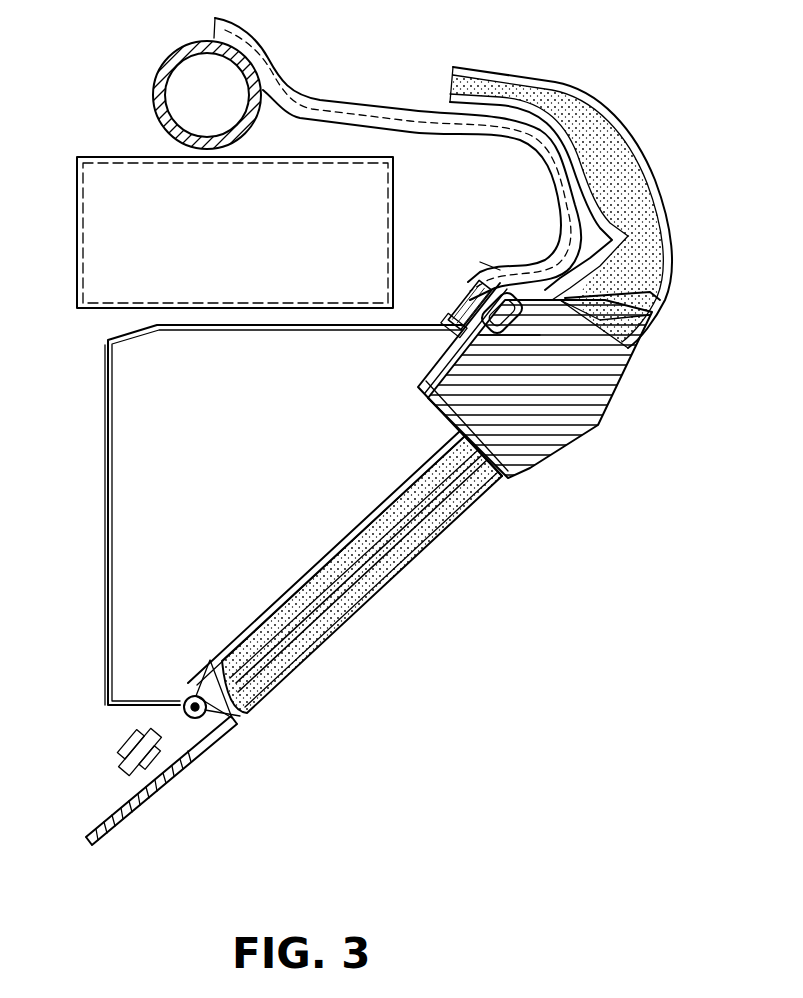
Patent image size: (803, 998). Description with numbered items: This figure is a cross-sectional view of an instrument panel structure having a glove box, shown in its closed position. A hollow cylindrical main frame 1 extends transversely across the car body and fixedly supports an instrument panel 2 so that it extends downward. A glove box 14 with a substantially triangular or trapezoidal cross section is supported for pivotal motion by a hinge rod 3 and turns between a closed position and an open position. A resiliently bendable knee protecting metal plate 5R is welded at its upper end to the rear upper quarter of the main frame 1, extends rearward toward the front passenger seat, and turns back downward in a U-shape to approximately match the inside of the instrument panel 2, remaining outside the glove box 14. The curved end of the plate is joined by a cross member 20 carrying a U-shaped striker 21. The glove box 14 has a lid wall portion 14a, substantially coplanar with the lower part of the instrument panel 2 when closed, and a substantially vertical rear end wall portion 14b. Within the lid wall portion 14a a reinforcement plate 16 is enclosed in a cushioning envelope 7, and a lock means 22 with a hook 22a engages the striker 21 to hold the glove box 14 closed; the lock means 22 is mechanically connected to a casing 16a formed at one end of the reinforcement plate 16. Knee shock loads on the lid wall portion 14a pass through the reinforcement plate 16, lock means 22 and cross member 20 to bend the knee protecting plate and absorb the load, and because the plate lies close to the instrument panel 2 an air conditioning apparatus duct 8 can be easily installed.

The main frame 1 is at (170, 58).
The instrument panel 2 is at (610, 122).
The hinge rod 3 is at (212, 715).
The knee protecting metal plate 5R is at (385, 107).
The cushioning envelope 7 is at (460, 505).
The air conditioning apparatus duct 8 is at (252, 247).
The glove box 14 is at (205, 408).
The lid wall portion 14a is at (427, 555).
The rear end wall portion 14b is at (104, 436).
The reinforcement plate 16 is at (350, 592).
The casing 16a is at (448, 405).
The cross member 20 is at (450, 330).
The striker 21 is at (458, 348).
The lock means 22 is at (594, 402).
The hook 22a is at (500, 283).